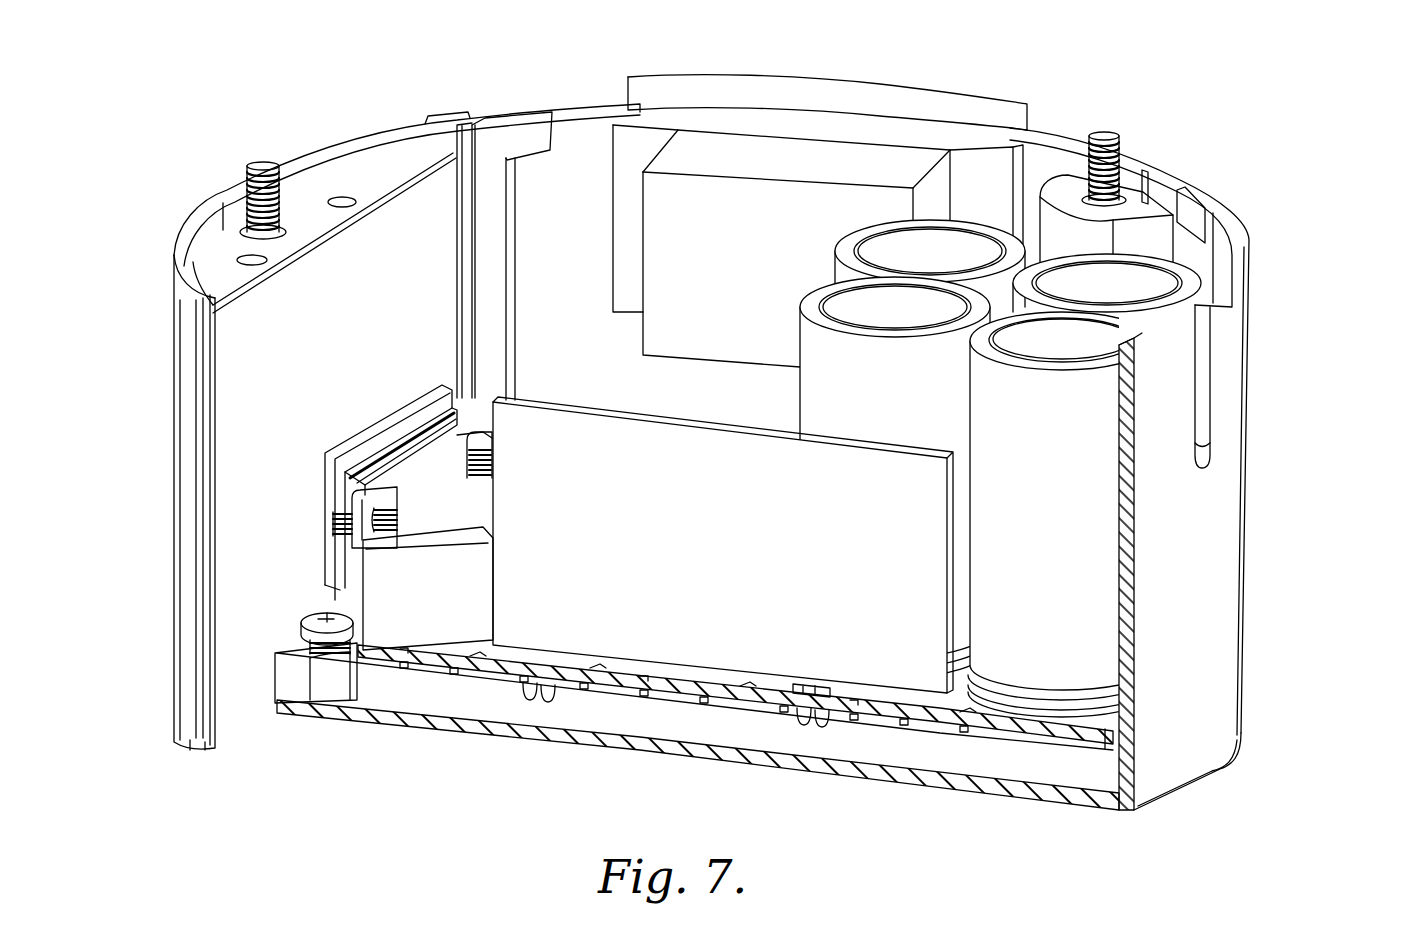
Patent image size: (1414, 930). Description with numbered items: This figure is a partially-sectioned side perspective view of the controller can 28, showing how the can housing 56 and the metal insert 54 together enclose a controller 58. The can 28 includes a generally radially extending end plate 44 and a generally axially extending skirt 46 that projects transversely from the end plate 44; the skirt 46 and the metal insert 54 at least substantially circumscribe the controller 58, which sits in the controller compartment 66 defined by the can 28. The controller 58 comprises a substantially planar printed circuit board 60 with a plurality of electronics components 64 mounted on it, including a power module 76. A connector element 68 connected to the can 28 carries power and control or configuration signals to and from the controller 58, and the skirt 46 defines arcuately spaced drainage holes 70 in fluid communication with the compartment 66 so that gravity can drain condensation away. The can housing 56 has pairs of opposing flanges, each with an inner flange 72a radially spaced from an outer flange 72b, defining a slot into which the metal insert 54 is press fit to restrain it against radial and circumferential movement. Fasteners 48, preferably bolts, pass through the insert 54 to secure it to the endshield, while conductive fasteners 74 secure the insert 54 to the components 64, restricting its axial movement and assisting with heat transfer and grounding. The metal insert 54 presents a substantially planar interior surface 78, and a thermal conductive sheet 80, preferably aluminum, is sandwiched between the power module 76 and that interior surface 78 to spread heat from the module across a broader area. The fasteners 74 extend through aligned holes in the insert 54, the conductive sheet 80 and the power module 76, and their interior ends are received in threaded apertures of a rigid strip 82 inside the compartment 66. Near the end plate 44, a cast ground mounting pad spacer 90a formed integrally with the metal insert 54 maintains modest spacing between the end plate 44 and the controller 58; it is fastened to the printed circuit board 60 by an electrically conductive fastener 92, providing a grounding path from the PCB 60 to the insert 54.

The controller can 28 is at (1283, 432).
The end plate 44 is at (965, 785).
The skirt 46 is at (1200, 538).
The fasteners 48 is at (1103, 140).
The metal insert 54 is at (155, 268).
The can housing 56 is at (1185, 805).
The controller 58 is at (470, 683).
The printed circuit board 60 is at (608, 683).
The electronics components 64 is at (870, 645).
The controller compartment 66 is at (578, 160).
The connector element 68 is at (848, 130).
The drainage holes 70 is at (1215, 380).
The inner flange 72a is at (493, 185).
The outer flange 72b is at (440, 120).
The fasteners 74 is at (337, 522).
The power module 76 is at (428, 445).
The interior surface 78 is at (235, 488).
The thermal conductive sheet 80 is at (372, 440).
The rigid strip 82 is at (443, 480).
The cast ground mounting pad spacer 90a is at (301, 688).
The fastener 92 is at (318, 625).